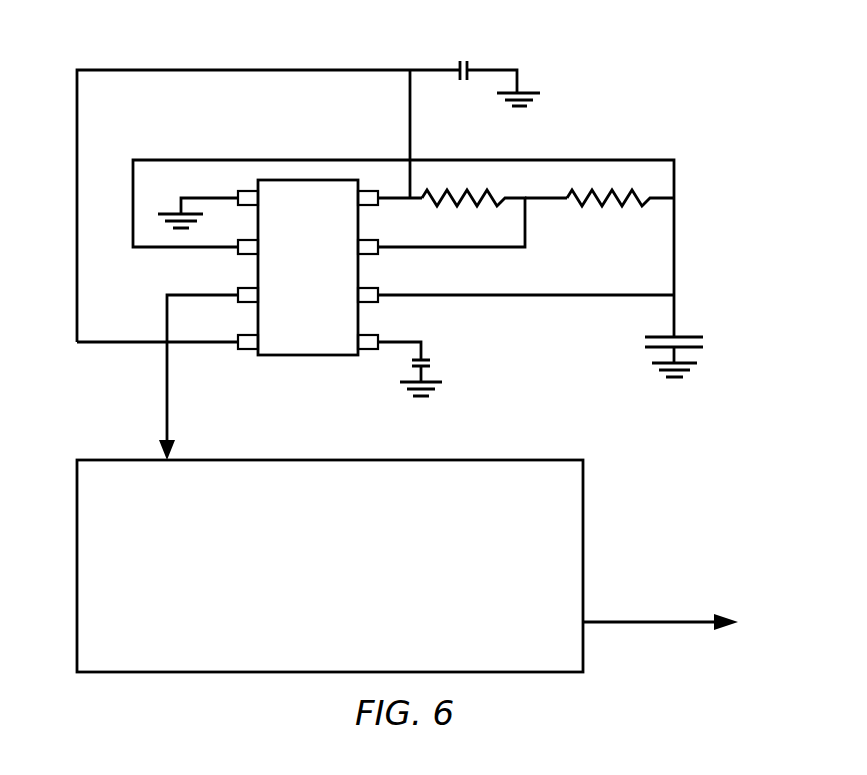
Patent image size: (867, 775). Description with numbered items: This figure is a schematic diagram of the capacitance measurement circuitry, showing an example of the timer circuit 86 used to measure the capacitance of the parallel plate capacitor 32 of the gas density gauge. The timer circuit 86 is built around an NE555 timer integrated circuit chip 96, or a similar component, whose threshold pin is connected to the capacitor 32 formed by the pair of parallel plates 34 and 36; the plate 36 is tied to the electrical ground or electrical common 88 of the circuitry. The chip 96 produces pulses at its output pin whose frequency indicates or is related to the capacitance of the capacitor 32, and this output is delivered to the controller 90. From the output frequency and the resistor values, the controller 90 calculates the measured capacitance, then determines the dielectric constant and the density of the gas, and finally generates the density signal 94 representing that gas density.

The parallel plate capacitor 32 is at (720, 321).
The parallel plate 34 is at (695, 333).
The parallel plate 36 is at (697, 349).
The timer circuit 86 is at (650, 65).
The electrical ground or electrical common 88 is at (665, 372).
The controller 90 is at (537, 460).
The density signal 94 is at (663, 622).
The NE555 timer integrated circuit chip 96 is at (288, 355).